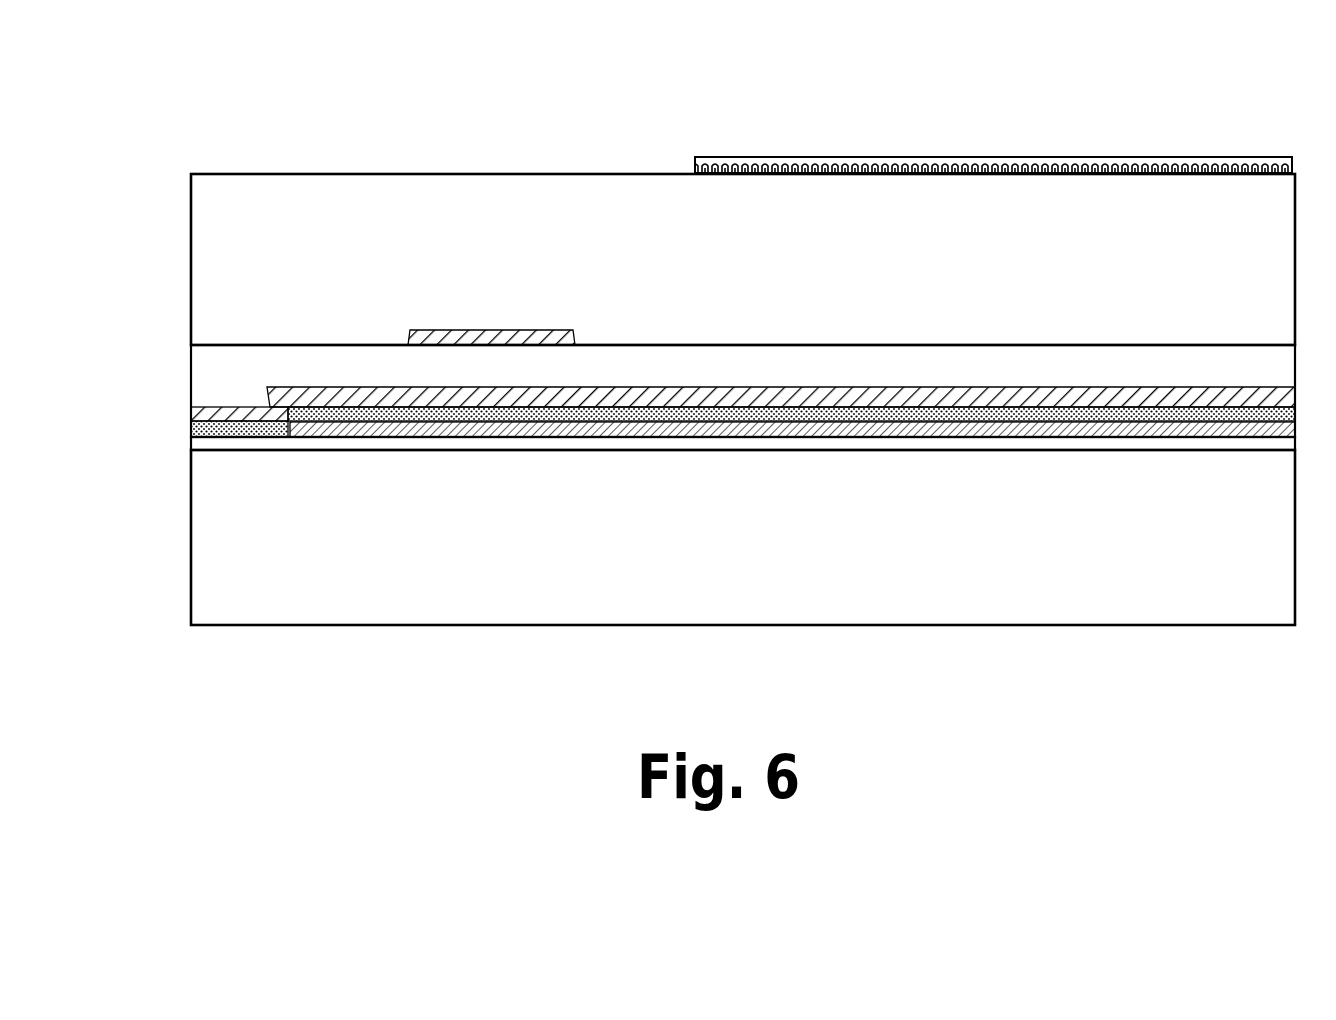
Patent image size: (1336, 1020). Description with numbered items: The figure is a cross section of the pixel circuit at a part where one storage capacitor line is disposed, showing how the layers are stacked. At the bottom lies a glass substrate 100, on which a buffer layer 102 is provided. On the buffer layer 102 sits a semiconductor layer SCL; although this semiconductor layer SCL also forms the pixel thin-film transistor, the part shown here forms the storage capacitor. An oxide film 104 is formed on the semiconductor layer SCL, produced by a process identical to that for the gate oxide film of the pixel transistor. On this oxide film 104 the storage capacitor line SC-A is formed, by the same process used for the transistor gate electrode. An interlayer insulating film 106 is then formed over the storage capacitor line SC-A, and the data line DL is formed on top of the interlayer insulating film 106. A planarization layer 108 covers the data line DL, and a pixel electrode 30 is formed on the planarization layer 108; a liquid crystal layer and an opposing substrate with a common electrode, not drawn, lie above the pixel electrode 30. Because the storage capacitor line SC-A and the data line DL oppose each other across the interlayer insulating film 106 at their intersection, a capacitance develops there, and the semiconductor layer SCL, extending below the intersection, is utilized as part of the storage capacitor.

The pixel electrode 30 is at (993, 157).
The glass substrate 100 is at (190, 528).
The buffer layer 102 is at (190, 437).
The oxide film 104 is at (743, 337).
The interlayer insulating film 106 is at (190, 372).
The planarization layer 108 is at (190, 252).
The data line DL is at (491, 312).
The semiconductor layer SCL is at (793, 438).
The storage capacitor line SC-A is at (950, 387).